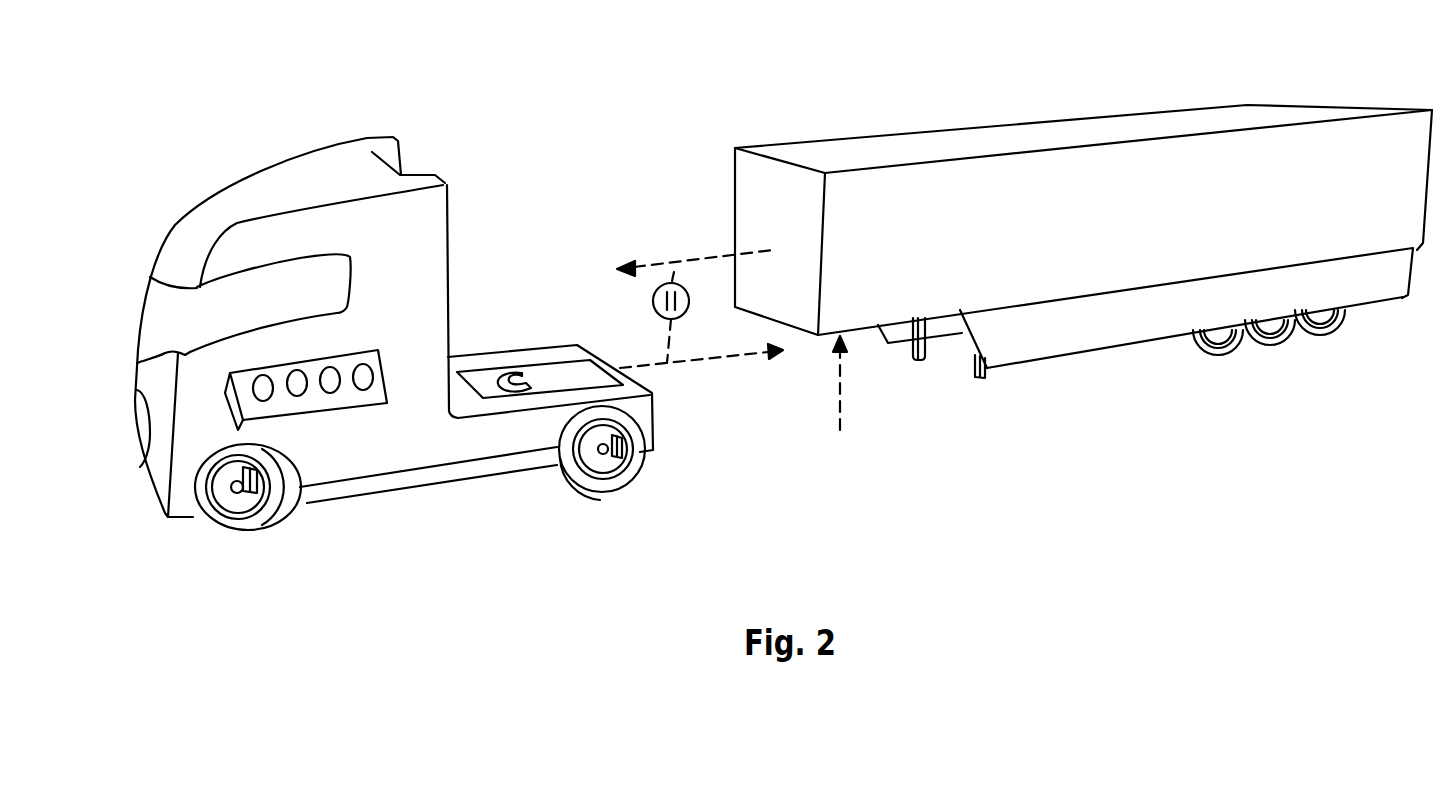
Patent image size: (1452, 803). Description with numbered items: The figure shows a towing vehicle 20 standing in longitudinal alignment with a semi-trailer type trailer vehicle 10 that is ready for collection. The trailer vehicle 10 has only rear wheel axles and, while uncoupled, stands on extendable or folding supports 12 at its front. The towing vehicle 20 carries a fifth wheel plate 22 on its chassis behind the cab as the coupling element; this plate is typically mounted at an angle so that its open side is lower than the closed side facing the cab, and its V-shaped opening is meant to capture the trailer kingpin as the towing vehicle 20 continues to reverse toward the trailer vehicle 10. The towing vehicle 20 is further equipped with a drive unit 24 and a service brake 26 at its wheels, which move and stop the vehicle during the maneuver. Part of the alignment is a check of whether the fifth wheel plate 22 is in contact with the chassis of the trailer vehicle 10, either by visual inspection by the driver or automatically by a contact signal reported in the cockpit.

The trailer vehicle 10 is at (1107, 113).
The extendable or folding supports 12 is at (927, 352).
The towing vehicle 20 is at (430, 230).
The fifth wheel plate 22 is at (517, 370).
The drive unit 24 is at (387, 388).
The service brake 26 is at (257, 493).